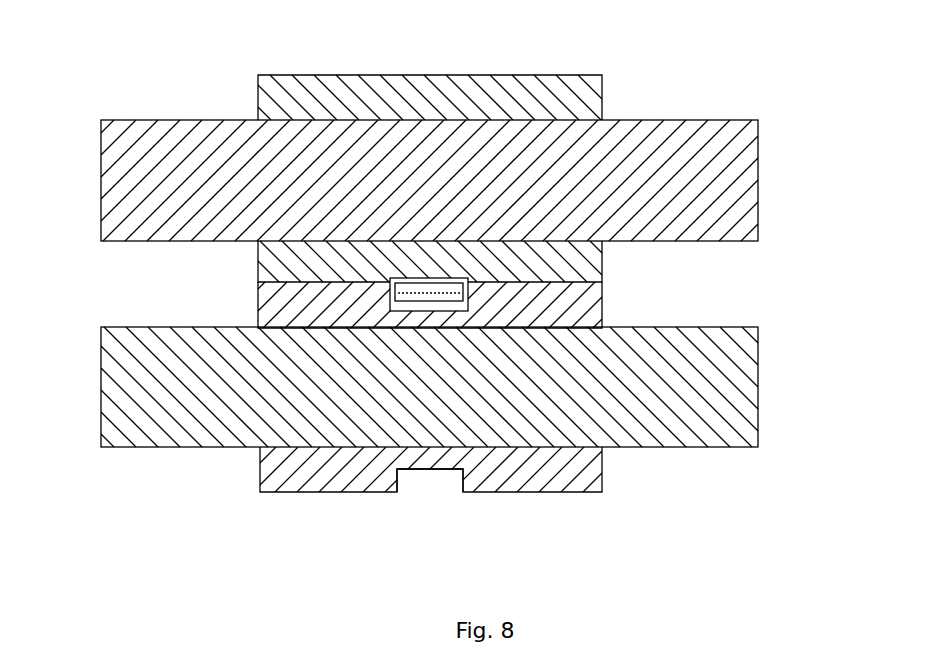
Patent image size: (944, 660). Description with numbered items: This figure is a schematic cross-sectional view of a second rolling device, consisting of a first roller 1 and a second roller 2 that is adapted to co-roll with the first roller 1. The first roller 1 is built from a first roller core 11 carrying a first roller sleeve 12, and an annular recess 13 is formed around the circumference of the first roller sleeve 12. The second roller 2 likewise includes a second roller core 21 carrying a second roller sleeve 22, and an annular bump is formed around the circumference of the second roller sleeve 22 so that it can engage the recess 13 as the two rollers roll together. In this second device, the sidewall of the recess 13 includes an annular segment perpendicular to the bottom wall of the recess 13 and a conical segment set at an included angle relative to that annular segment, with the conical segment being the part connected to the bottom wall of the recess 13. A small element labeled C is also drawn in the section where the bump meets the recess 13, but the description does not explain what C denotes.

The first roller 1 is at (441, 416).
The second roller 2 is at (450, 157).
The first roller core 11 is at (110, 412).
The first roller sleeve 12 is at (261, 490).
The recess 13 is at (422, 478).
The second roller core 21 is at (112, 155).
The second roller sleeve 22 is at (278, 92).
The connecting element C is at (468, 301).